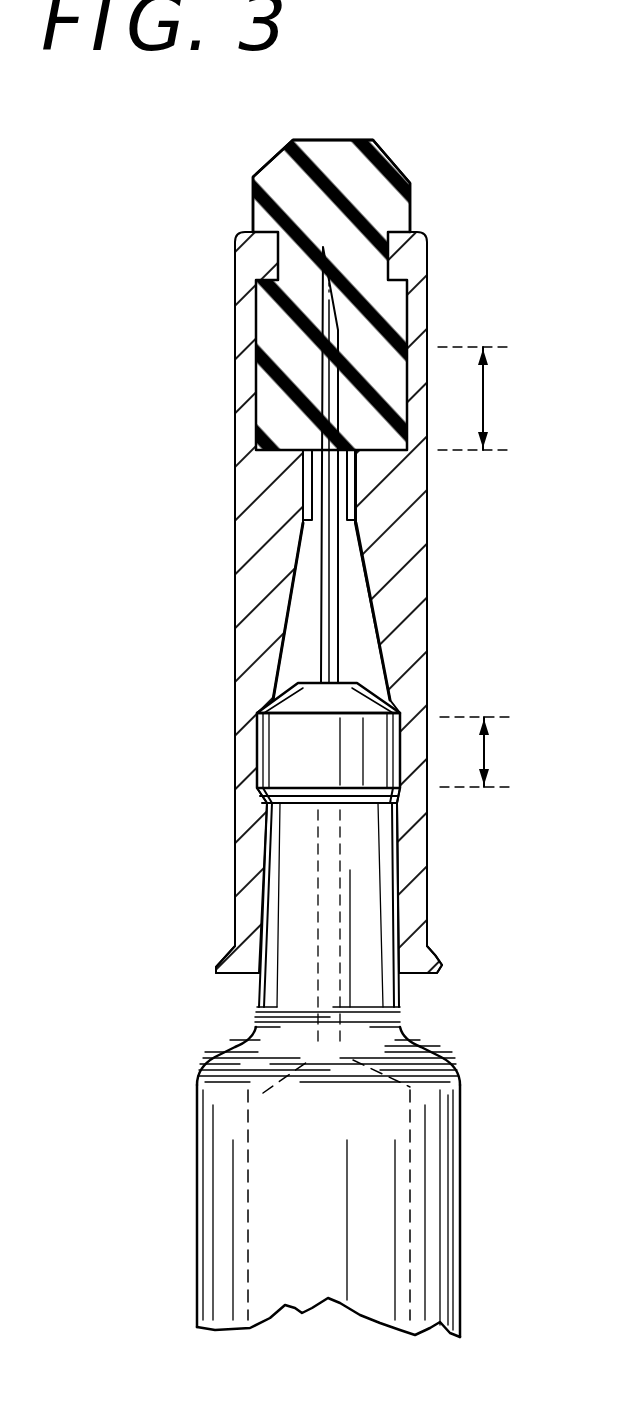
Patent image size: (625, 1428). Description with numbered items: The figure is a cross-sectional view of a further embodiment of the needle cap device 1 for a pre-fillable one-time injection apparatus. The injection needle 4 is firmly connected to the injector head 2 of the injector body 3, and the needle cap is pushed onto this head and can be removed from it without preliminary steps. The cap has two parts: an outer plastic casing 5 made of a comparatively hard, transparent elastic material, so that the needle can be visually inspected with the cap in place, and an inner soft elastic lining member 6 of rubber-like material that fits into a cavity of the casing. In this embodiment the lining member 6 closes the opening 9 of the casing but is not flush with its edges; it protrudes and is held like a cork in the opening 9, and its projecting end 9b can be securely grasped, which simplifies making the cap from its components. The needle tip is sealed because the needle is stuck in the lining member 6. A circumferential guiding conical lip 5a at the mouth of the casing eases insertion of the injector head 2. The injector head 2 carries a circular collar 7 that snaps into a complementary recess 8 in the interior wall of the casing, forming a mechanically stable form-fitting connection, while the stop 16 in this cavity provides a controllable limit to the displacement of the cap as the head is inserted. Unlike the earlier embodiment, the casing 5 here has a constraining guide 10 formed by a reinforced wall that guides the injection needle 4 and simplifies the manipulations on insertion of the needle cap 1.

The needle cap device 1 is at (166, 215).
The injector head 2 is at (365, 964).
The injector body 3 is at (395, 1165).
The injection needle 4 is at (340, 598).
The outer plastic casing 5 is at (258, 599).
The circumferential guiding conical lip 5a is at (238, 973).
The lining member 6 is at (266, 340).
The circular collar 7 is at (288, 762).
The recess 8 is at (258, 745).
The opening 9 is at (405, 222).
The projecting end 9b is at (358, 147).
The constraining guide 10 is at (317, 489).
The stop 16 is at (268, 699).